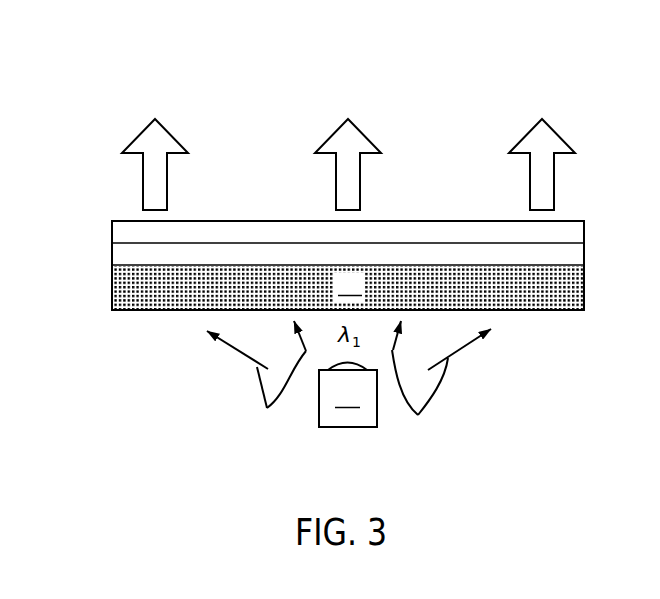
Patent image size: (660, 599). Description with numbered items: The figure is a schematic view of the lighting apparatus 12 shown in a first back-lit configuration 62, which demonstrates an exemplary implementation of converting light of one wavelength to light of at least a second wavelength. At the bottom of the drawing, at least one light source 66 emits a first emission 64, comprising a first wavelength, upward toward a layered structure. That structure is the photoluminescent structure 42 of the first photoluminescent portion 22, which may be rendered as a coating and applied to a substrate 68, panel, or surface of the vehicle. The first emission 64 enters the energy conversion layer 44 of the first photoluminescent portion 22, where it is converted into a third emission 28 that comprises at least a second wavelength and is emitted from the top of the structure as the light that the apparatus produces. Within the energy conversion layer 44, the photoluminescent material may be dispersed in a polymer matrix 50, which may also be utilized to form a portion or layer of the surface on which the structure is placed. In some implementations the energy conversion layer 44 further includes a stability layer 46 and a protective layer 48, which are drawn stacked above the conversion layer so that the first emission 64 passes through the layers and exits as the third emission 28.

The lighting apparatus 12 is at (341, 199).
The first back-lit configuration 62 is at (465, 76).
The first photoluminescent portion 22 is at (349, 288).
The third emission 28 is at (149, 186).
The photoluminescent structure 42 is at (98, 285).
The energy conversion layer 44 is at (375, 291).
The stability layer 46 is at (572, 256).
The protective layer 48 is at (573, 233).
The polymer matrix 50 is at (98, 297).
The first emission 64 is at (349, 381).
The light source 66 is at (348, 395).
The substrate 68 is at (148, 311).